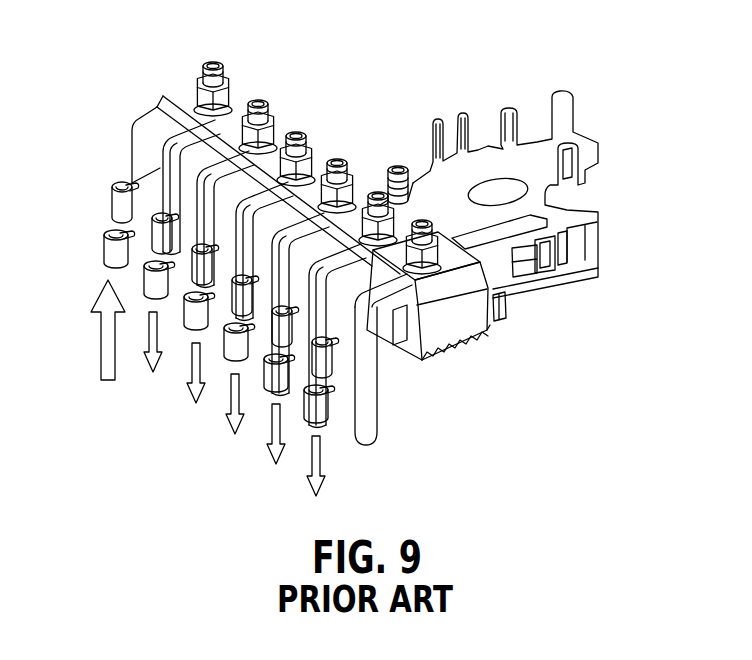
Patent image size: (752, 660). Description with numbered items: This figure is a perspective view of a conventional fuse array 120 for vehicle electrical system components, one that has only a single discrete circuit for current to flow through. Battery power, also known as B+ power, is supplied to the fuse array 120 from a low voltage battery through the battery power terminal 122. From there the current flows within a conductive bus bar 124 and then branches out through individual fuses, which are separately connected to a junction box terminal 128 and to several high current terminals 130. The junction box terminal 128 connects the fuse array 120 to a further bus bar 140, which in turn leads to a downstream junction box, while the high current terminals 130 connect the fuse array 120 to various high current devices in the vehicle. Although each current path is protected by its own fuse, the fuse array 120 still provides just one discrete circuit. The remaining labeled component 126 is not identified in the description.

The fuse array 120 is at (325, 76).
The battery power terminal 122 is at (141, 150).
The conductive bus bar 124 is at (207, 128).
The connector 126 is at (480, 320).
The junction box terminal 128 is at (412, 190).
The high current terminals 130 is at (220, 223).
The bus bar 140 is at (570, 142).